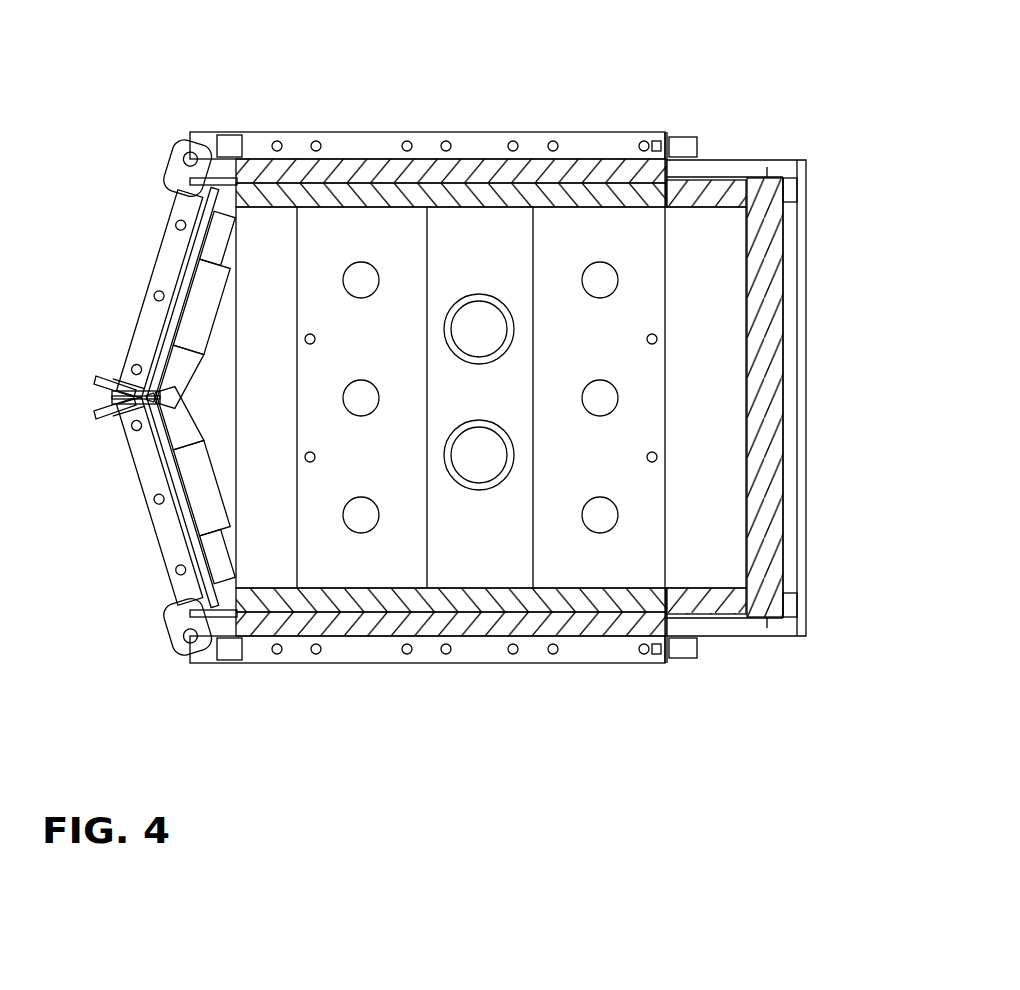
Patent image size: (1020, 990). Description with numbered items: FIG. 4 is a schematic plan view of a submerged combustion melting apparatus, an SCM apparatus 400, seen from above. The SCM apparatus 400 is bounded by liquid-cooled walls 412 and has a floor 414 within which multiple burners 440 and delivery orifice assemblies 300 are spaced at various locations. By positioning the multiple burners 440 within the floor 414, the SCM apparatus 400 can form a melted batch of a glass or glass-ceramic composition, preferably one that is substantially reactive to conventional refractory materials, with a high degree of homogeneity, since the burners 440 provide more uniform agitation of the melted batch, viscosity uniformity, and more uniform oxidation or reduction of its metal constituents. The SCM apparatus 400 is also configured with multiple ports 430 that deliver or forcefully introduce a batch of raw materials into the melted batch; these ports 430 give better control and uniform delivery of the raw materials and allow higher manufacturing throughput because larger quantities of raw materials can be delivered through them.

The SCM apparatus 400 is at (812, 106).
The liquid-cooled walls 412 is at (278, 192).
The floor 414 is at (708, 253).
The ports 430 is at (198, 304).
The burners 440 is at (350, 300).
The delivery orifice assemblies 300 is at (461, 360).